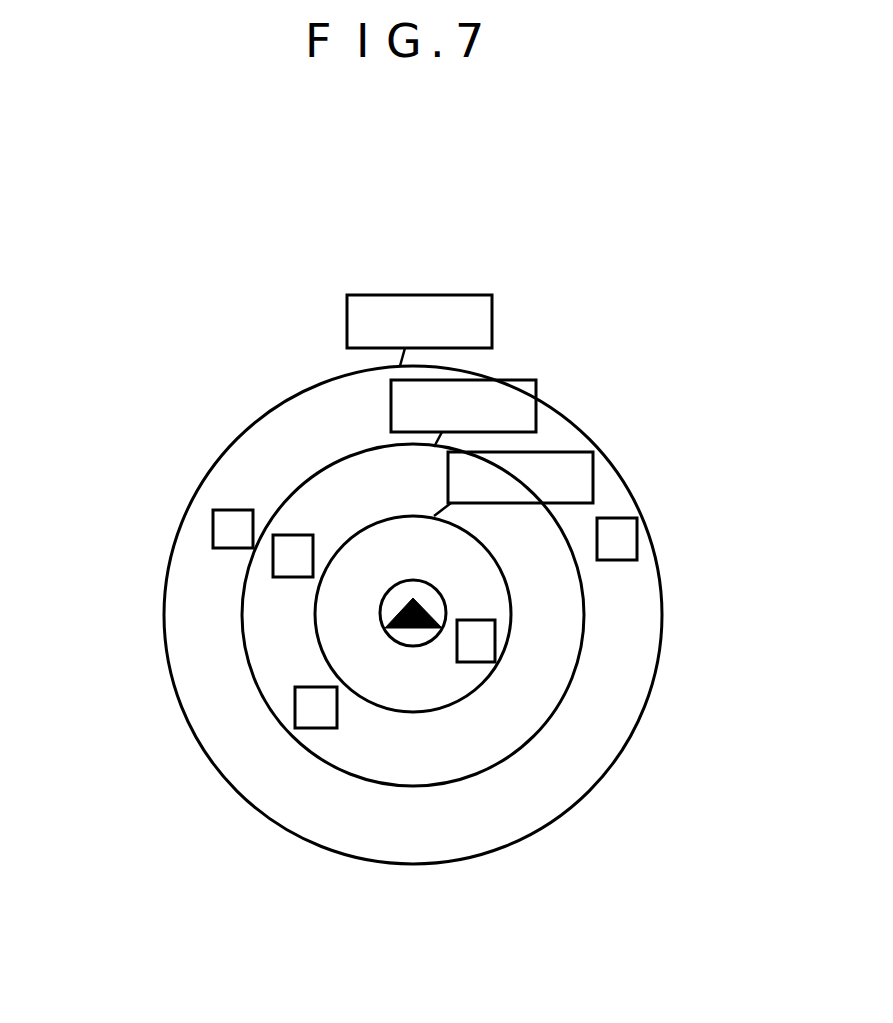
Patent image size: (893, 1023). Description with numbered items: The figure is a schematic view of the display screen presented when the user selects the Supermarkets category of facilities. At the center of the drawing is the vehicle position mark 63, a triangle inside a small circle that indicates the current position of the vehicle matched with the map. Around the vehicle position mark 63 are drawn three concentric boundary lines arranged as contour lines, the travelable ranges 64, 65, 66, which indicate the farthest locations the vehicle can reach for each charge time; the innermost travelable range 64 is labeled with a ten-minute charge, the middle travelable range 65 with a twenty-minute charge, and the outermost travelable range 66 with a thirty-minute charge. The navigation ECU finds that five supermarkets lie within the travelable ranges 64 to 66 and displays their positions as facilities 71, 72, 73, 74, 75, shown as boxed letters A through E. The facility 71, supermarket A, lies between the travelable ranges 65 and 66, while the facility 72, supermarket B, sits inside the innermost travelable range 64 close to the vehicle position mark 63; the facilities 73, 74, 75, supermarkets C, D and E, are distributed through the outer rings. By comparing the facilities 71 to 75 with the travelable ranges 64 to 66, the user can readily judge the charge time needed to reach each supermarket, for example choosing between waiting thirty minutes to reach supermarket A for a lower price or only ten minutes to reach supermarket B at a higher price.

The vehicle position mark 63 is at (381, 619).
The travelable range 64 is at (315, 612).
The travelable range 65 is at (573, 688).
The travelable range 66 is at (663, 647).
The facility 71 is at (627, 518).
The facility 72 is at (492, 662).
The facility 73 is at (300, 728).
The facility 74 is at (305, 535).
The facility 75 is at (213, 530).